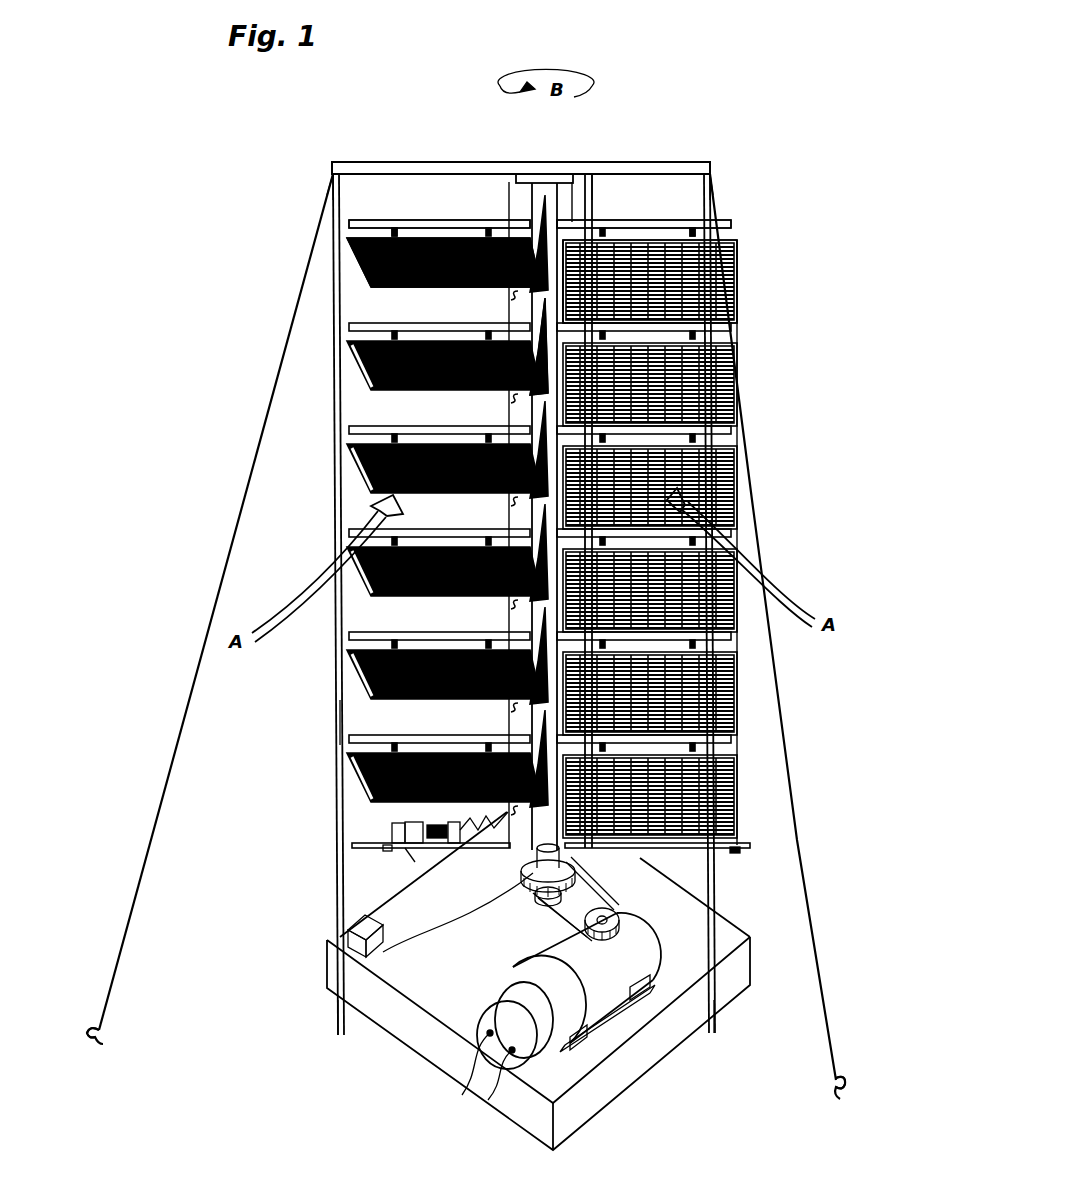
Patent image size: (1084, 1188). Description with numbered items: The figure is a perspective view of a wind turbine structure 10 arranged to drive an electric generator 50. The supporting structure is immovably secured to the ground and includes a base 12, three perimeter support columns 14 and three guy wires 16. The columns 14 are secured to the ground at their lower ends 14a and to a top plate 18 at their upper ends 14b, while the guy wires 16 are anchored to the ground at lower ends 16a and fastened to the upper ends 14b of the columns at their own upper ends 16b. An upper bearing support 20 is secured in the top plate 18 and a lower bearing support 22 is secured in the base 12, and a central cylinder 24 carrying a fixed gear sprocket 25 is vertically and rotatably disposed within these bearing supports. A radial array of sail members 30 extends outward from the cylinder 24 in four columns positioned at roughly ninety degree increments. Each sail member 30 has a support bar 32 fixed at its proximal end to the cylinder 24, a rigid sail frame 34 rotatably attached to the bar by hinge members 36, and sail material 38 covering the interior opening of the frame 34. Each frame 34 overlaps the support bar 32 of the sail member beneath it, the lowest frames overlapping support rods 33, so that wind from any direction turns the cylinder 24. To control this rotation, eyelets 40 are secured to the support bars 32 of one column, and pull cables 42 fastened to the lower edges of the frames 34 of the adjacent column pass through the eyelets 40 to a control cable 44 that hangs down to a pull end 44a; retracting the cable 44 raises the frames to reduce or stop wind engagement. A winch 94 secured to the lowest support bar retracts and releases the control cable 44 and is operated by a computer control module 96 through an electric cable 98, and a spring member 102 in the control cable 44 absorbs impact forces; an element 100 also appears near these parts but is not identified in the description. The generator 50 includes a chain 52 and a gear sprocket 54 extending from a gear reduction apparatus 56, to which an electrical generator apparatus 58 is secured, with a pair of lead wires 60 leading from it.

The wind turbine structure 10 is at (737, 113).
The base 12 is at (733, 937).
The perimeter support columns 14 is at (592, 225).
The lower ends of support columns 14a is at (337, 1032).
The upper ends of support columns 14b is at (600, 174).
The guy wires 16 is at (598, 195).
The lower ends of guy wires 16a is at (101, 1014).
The upper ends of guy wires 16b is at (327, 190).
The top plate 18 is at (368, 162).
The upper bearing support 20 is at (513, 181).
The lower bearing support 22 is at (538, 905).
The central cylinder 24 is at (562, 177).
The gear sprocket 25 is at (580, 860).
The sail members 30 is at (337, 470).
The support bar 32 is at (395, 220).
The support rods 33 is at (370, 843).
The sail frame 34 is at (732, 242).
The hinge members 36 is at (465, 220).
The sail material 38 is at (737, 260).
The eyelets 40 is at (510, 292).
The pull cables 42 is at (598, 300).
The control cable 44 is at (352, 722).
The pull end 44a is at (410, 865).
The electric generator 50 is at (552, 1019).
The chain 52 is at (598, 880).
The gear sprocket 54 is at (620, 915).
The gear reduction apparatus 56 is at (640, 960).
The electrical generator apparatus 58 is at (520, 982).
The lead wires 60 is at (488, 1100).
The winch 94 is at (398, 830).
The computer control module 96 is at (350, 933).
The electric cable 98 is at (420, 920).
The sensor 100 is at (385, 850).
The spring member 102 is at (436, 819).